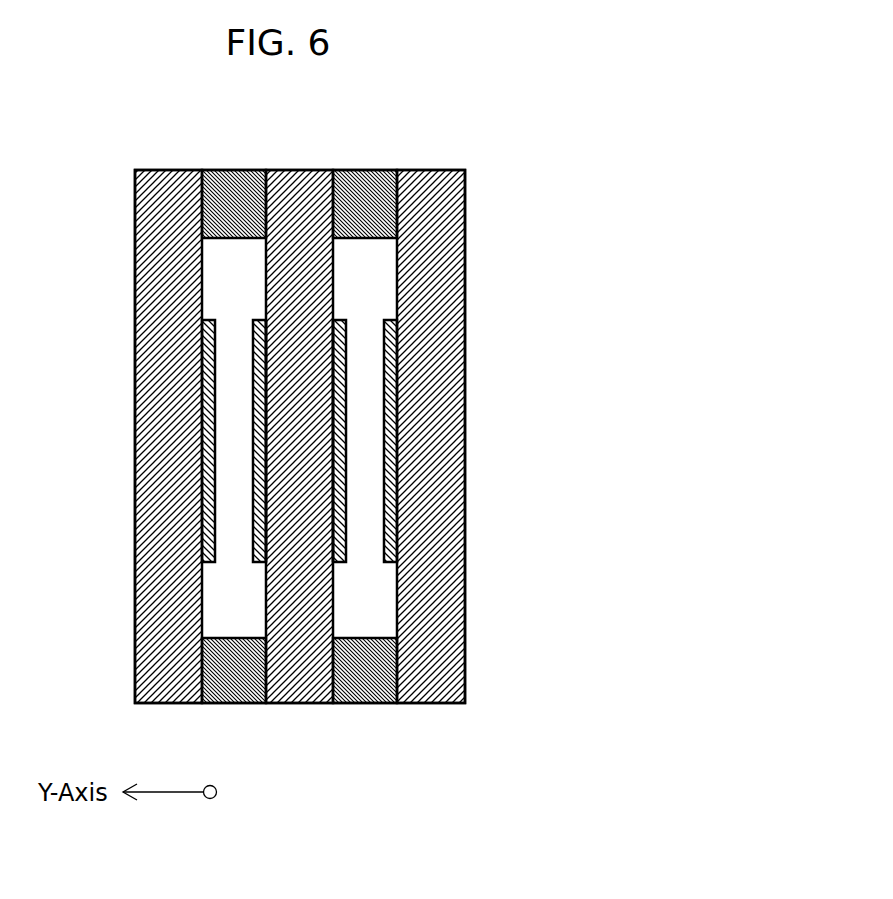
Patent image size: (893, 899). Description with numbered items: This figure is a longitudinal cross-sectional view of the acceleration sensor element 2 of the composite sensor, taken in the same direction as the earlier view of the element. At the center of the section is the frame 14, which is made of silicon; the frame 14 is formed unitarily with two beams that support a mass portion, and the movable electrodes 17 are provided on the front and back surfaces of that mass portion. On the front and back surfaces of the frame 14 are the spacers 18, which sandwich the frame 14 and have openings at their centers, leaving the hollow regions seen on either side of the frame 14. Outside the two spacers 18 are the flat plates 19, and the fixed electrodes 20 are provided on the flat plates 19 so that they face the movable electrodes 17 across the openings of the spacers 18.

The acceleration sensor element 2 is at (465, 173).
The frame 14 is at (300, 192).
The movable electrodes 17 is at (265, 563).
The spacers 18 is at (228, 190).
The flat plates 19 is at (163, 192).
The fixed electrodes 20 is at (202, 438).